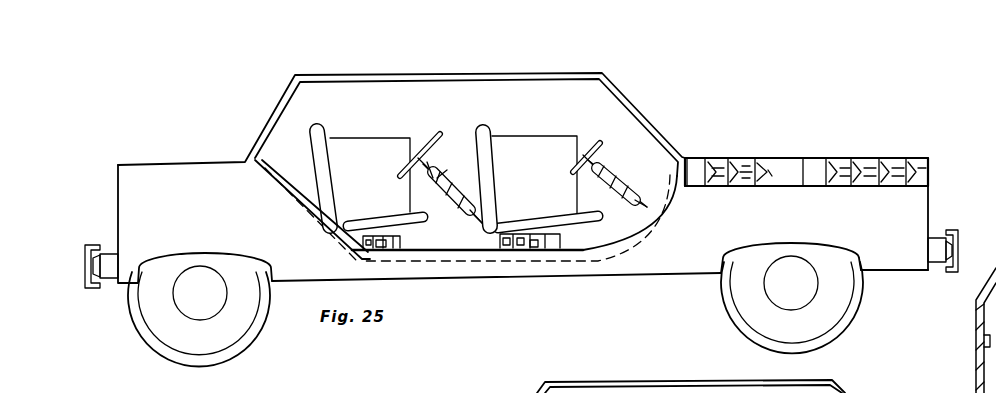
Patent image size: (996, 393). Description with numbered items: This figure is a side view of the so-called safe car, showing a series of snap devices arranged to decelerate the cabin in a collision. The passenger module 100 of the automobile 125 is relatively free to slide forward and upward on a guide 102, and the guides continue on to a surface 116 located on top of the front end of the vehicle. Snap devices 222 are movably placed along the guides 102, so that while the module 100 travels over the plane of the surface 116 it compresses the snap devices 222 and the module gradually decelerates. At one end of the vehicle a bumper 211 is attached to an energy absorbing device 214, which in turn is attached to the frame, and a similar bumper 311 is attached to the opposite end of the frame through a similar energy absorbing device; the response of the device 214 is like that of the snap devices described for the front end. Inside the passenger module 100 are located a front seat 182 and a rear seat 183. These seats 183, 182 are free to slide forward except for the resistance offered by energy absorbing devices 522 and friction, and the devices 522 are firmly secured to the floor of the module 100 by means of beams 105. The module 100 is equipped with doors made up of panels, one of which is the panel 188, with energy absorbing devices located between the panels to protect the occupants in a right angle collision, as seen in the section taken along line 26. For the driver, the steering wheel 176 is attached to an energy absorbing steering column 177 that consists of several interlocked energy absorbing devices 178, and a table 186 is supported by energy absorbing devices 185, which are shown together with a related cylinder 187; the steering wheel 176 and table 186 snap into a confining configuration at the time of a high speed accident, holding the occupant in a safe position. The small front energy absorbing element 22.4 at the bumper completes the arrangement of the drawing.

The passenger module 100 is at (643, 116).
The guide 102 is at (623, 246).
The beam 105 is at (396, 246).
The surface 116 is at (861, 187).
The automobile 125 is at (588, 277).
The steering wheel 176 is at (574, 164).
The energy absorbing steering column 177 is at (612, 188).
The energy absorbing device 178 is at (624, 184).
The front seat 182 is at (489, 129).
The rear seat 183 is at (330, 132).
The energy absorbing device 185 is at (462, 209).
The table 186 is at (417, 159).
The actuator cylinder 187 is at (450, 186).
The door panel 188 is at (977, 383).
The bumper 211 is at (958, 233).
The energy absorbing device 214 is at (938, 264).
The front bumper shock absorber 22.4 is at (110, 282).
The snap device 222 is at (768, 163).
The section line 26- 26 is at (457, 138).
The bumper 311 is at (85, 251).
The energy absorbing device 522 is at (381, 248).